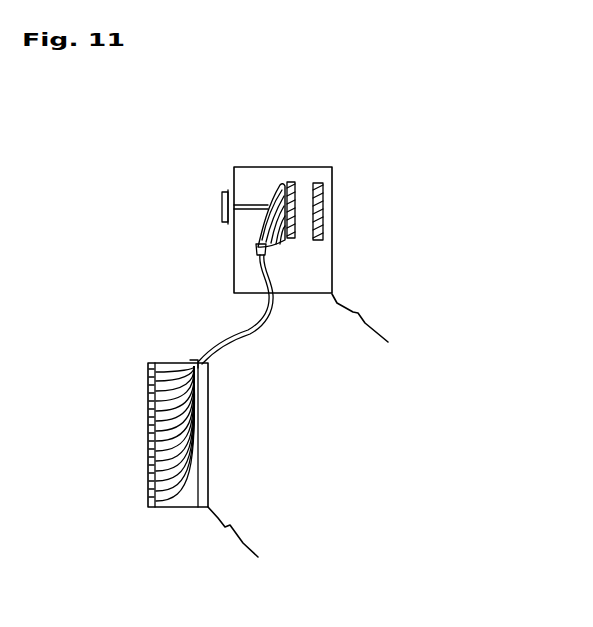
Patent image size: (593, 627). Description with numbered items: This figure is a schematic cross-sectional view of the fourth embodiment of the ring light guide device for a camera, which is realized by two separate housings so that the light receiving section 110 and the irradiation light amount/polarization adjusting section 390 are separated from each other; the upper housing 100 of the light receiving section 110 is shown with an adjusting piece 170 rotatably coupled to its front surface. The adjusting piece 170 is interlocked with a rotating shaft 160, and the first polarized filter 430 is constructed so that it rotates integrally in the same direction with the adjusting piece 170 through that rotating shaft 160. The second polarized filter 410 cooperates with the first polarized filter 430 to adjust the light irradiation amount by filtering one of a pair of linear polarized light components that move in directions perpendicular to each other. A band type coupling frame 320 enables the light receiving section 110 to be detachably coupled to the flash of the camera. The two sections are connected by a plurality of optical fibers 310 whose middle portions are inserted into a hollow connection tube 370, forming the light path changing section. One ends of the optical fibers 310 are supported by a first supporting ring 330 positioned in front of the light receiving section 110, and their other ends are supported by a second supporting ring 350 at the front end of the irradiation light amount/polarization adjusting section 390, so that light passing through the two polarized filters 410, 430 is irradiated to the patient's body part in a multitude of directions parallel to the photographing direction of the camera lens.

The housing 100 is at (333, 265).
The light receiving section 110 is at (378, 325).
The rotating shaft 160 is at (253, 207).
The adjusting piece 170 is at (222, 207).
The optical fibers 310 is at (262, 222).
The band type coupling frame 320 is at (210, 410).
The first supporting ring 330 is at (282, 182).
The second supporting ring 350 is at (165, 363).
The connection tube 370 is at (264, 327).
The irradiation light amount/polarization adjusting section 390 is at (246, 545).
The second polarized filter 410 is at (320, 200).
The first polarized filter 430 is at (297, 180).